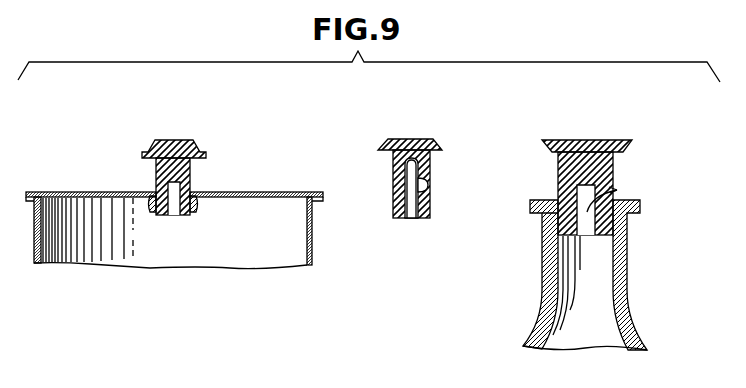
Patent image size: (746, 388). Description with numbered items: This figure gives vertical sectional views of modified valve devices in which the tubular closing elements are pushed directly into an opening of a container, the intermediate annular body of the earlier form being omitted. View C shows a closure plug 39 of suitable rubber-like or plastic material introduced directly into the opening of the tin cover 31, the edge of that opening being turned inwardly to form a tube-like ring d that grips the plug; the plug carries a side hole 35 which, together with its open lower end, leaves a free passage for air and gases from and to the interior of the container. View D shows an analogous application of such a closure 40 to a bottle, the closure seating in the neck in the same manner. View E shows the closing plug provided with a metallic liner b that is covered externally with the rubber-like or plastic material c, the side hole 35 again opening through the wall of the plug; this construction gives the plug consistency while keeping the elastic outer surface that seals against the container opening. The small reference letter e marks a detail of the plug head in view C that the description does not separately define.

The tin cover 31 is at (290, 191).
The side hole 35 is at (176, 196).
The closure plug 39 is at (192, 166).
The closure 40 is at (613, 165).
The view C is at (152, 272).
The view D is at (648, 248).
The view E is at (402, 230).
The metallic liner b is at (408, 203).
The rubber-like or plastic material c is at (393, 177).
The tube-like ring d is at (197, 206).
The head flange e is at (148, 155).